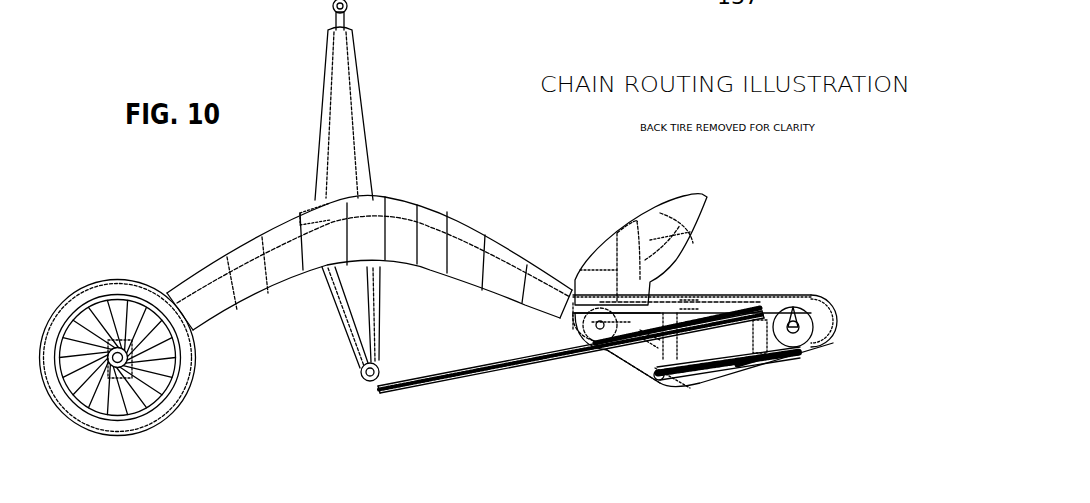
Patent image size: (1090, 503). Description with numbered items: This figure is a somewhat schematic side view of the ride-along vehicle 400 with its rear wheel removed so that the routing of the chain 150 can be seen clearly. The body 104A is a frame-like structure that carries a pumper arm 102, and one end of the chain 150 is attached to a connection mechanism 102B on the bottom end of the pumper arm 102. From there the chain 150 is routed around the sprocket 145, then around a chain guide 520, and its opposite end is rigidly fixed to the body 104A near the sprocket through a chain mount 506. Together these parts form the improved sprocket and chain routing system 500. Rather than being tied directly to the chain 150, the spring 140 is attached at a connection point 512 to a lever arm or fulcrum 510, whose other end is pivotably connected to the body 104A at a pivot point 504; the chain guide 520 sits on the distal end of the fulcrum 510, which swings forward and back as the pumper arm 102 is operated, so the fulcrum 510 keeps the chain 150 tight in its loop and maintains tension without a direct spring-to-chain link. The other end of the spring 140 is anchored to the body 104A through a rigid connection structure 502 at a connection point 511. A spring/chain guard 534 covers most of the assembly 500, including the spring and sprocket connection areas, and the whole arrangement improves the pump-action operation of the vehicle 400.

The ride-along vehicle 400 is at (162, 216).
The pumper arm 102 is at (358, 92).
The connection mechanism 102B is at (377, 392).
The body 104A is at (576, 302).
The chain 150 is at (468, 346).
The sprocket and chain routing system 500 is at (623, 400).
The spring 140 is at (640, 332).
The pivot point 504 is at (667, 342).
The connection point 512 is at (680, 303).
The spring/chain guard 534 is at (828, 314).
The sprocket 145 is at (813, 343).
The chain mount 506 is at (765, 357).
The chain guide 520 is at (673, 386).
The fulcrum 510 is at (660, 353).
The rigid connection structure 502 is at (587, 316).
The connection point 511 is at (603, 329).